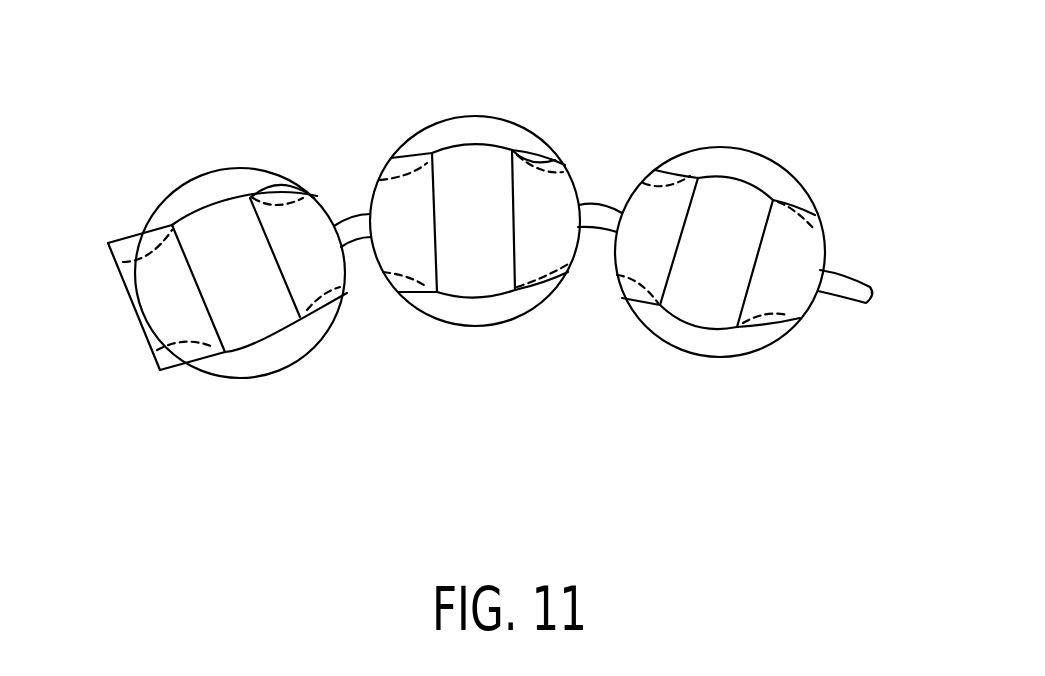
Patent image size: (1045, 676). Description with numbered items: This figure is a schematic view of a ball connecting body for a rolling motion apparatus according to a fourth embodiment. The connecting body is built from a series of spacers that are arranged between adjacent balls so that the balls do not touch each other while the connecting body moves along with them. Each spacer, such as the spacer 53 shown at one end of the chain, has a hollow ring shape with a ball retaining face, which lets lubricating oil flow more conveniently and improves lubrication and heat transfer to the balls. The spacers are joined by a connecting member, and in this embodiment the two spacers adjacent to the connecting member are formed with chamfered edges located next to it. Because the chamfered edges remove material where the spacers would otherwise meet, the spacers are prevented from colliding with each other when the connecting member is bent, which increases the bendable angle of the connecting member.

The spacer 53 is at (125, 232).